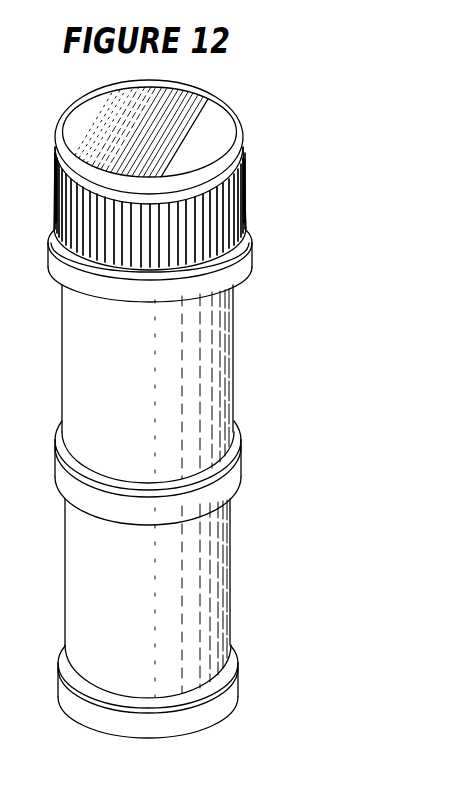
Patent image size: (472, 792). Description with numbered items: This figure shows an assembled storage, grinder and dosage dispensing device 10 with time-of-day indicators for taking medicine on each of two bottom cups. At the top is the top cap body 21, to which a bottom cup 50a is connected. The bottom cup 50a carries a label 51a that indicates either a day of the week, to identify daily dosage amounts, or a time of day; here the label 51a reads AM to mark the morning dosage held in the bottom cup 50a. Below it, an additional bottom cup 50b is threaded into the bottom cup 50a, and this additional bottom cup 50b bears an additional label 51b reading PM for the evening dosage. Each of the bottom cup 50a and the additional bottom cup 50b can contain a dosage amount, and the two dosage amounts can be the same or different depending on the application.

The storage, grinder and dosage dispensing device 10 is at (302, 126).
The top cap body 21 is at (243, 176).
The bottom cup 50a is at (234, 341).
The label 51a is at (120, 385).
The additional bottom cup 50b is at (230, 577).
The additional label 51b is at (127, 604).